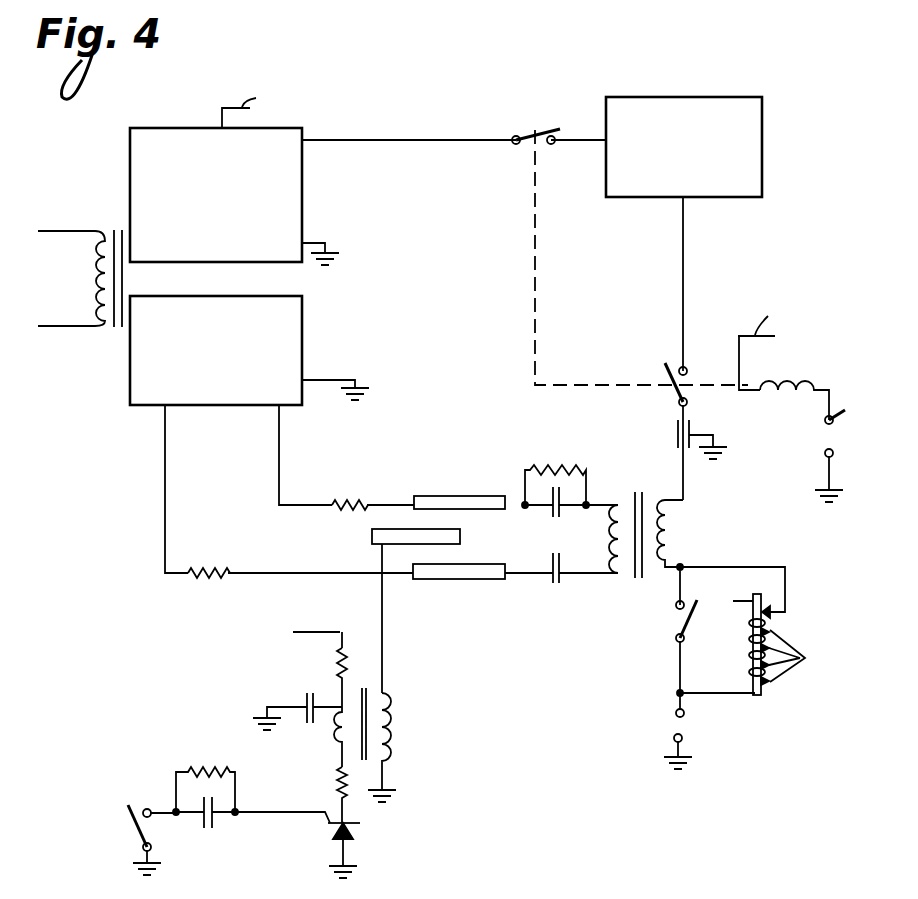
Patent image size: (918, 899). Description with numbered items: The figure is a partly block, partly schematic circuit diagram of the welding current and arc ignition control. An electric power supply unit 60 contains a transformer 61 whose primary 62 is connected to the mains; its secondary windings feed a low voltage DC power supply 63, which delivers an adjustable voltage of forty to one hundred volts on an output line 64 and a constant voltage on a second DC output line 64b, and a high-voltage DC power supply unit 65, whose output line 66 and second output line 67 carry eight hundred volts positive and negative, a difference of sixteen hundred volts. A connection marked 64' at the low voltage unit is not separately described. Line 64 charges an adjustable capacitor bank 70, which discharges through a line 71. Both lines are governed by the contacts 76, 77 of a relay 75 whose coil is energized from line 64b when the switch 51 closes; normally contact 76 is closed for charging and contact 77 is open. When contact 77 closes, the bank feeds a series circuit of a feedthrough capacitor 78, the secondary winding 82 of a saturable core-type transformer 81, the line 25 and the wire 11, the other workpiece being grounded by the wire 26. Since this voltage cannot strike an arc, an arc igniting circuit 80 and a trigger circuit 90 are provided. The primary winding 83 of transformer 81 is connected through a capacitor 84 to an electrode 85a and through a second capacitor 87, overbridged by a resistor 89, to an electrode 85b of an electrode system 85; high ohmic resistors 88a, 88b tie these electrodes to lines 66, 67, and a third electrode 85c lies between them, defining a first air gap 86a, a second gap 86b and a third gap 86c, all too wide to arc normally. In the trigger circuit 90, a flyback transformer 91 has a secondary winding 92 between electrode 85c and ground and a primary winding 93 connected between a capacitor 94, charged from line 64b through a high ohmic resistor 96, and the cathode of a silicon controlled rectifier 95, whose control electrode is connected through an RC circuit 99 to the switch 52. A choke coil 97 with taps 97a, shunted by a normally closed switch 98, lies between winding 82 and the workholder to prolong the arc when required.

The wire 11 is at (684, 714).
The line 25 is at (675, 591).
The wire 26 is at (683, 748).
The switch 51 is at (845, 412).
The switch 52 is at (132, 828).
The electric power supply unit 60 is at (342, 100).
The transformer 61 is at (115, 340).
The primary 62 is at (88, 247).
The low voltage DC power supply 63 is at (302, 185).
The output line 64 is at (518, 107).
The B- terminal 64' is at (244, 90).
The second DC output line 64b is at (743, 333).
The high-voltage DC power supply unit 65 is at (302, 318).
The output line 66 is at (164, 488).
The second output line 67 is at (280, 460).
The adjustable capacitor bank 70 is at (777, 68).
The line 71 is at (683, 243).
The relay 75 is at (786, 394).
The contact 76 is at (548, 128).
The contact 77 is at (665, 363).
The feedthrough capacitor 78 is at (677, 437).
The arc igniting circuit 80 is at (516, 594).
The saturable core-type transformer 81 is at (643, 587).
The secondary winding 82 is at (665, 543).
The primary winding 83 is at (601, 502).
The capacitor 84 is at (550, 582).
The electrode system 85 is at (518, 559).
The electrode 85a is at (443, 580).
The electrode 85b is at (463, 496).
The third electrode 85c is at (398, 529).
The first air gap 86a is at (484, 538).
The second gap 86b is at (426, 517).
The third gap 86c is at (441, 553).
The second capacitor 87 is at (587, 492).
The high ohmic resistor 88a is at (217, 581).
The high ohmic resistor 88b is at (352, 515).
The resistor 89 is at (557, 458).
The trigger circuit 90 is at (190, 678).
The transformer 91 is at (364, 773).
The secondary winding 92 is at (396, 724).
The primary winding 93 is at (337, 737).
The capacitor 94 is at (314, 700).
The silicon controlled rectifier 95 is at (353, 838).
The high ohmic resistor 96 is at (337, 661).
The choke coil 97 is at (750, 637).
The taps 97a is at (815, 656).
The switch 98 is at (227, 737).
The RC circuit 99 is at (222, 818).